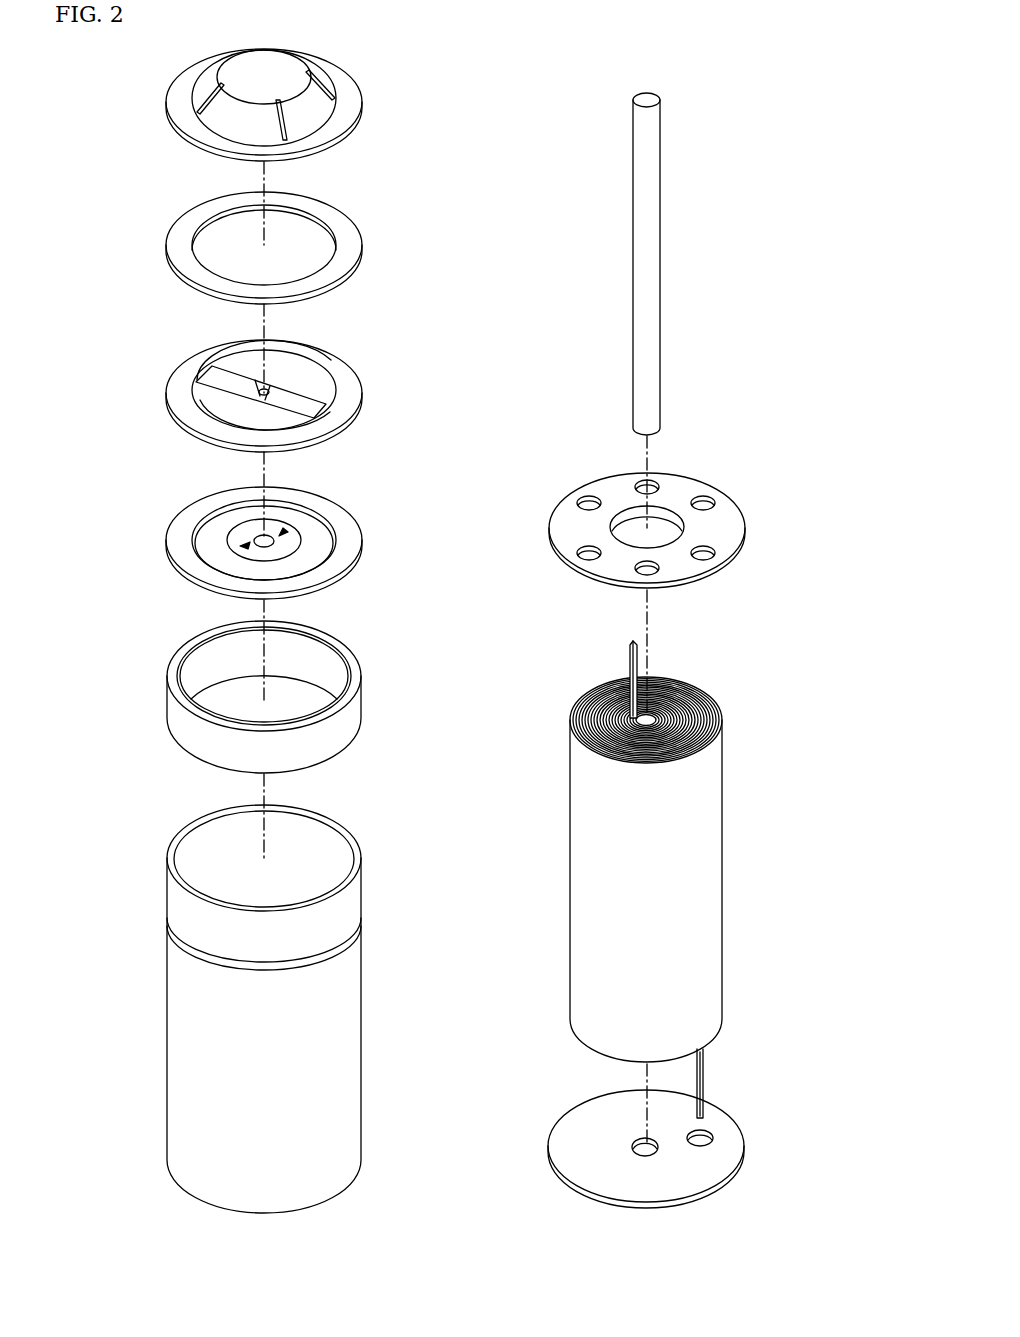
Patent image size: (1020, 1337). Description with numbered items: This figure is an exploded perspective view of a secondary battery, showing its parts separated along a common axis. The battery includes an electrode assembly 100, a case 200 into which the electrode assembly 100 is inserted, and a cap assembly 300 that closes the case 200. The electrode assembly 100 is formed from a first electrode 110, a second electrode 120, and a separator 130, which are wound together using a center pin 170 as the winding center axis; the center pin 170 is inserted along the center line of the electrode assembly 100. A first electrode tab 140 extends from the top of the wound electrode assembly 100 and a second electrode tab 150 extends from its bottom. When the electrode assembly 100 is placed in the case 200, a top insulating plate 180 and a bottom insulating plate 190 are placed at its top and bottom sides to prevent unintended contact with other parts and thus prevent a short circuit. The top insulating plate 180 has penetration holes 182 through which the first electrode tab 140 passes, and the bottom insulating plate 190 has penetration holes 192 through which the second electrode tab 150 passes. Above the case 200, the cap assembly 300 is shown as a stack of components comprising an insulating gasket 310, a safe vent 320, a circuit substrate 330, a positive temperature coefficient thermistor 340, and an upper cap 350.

The electrode assembly 100 is at (696, 873).
The first electrode 110 is at (692, 690).
The second electrode 120 is at (715, 700).
The separator 130 is at (702, 693).
The first electrode tab 140 is at (636, 656).
The second electrode tab 150 is at (705, 1070).
The center pin 170 is at (651, 258).
The top insulating plate 180 is at (693, 527).
The penetration holes 182 is at (706, 497).
The bottom insulating plate 190 is at (692, 1149).
The penetration holes 192 is at (703, 1128).
The case 200 is at (178, 1015).
The cap assembly 300 is at (402, 333).
The insulating gasket 310 is at (178, 719).
The safe vent 320 is at (178, 547).
The circuit substrate 330 is at (178, 400).
The positive temperature coefficient (PTC) thermistor 340 is at (178, 249).
The upper cap 350 is at (178, 106).